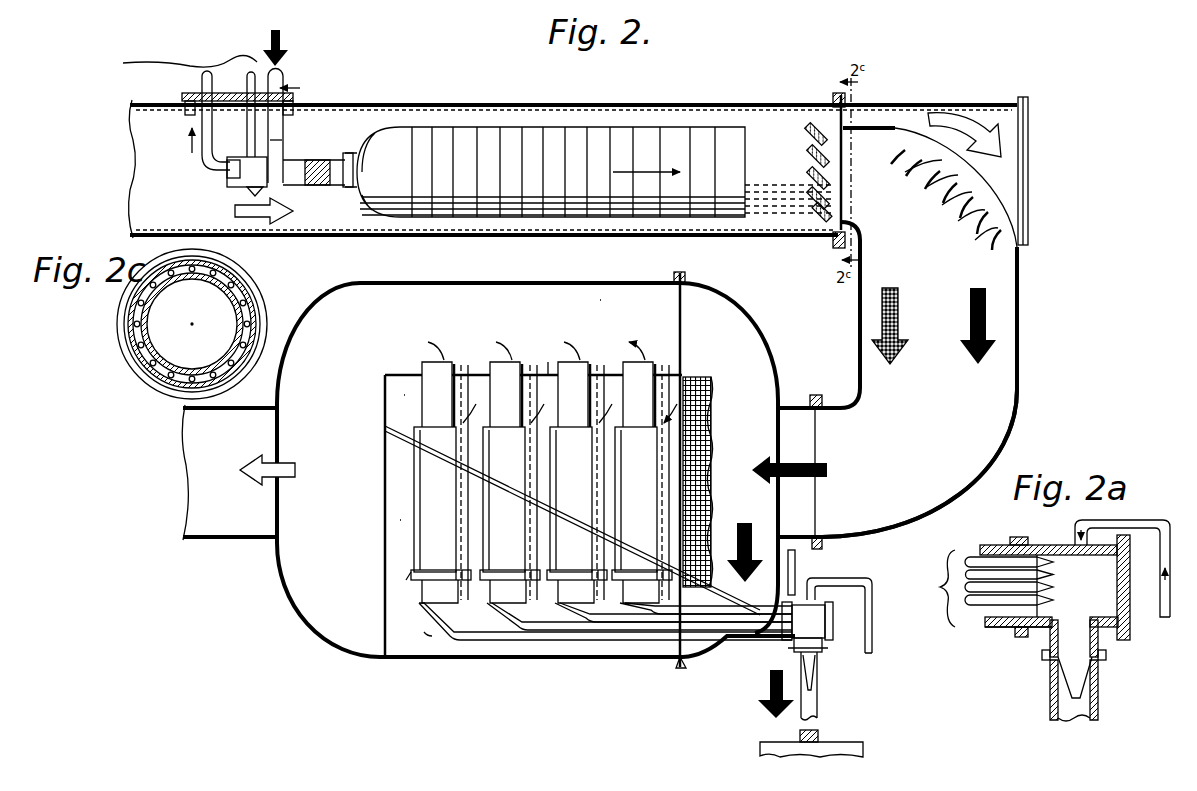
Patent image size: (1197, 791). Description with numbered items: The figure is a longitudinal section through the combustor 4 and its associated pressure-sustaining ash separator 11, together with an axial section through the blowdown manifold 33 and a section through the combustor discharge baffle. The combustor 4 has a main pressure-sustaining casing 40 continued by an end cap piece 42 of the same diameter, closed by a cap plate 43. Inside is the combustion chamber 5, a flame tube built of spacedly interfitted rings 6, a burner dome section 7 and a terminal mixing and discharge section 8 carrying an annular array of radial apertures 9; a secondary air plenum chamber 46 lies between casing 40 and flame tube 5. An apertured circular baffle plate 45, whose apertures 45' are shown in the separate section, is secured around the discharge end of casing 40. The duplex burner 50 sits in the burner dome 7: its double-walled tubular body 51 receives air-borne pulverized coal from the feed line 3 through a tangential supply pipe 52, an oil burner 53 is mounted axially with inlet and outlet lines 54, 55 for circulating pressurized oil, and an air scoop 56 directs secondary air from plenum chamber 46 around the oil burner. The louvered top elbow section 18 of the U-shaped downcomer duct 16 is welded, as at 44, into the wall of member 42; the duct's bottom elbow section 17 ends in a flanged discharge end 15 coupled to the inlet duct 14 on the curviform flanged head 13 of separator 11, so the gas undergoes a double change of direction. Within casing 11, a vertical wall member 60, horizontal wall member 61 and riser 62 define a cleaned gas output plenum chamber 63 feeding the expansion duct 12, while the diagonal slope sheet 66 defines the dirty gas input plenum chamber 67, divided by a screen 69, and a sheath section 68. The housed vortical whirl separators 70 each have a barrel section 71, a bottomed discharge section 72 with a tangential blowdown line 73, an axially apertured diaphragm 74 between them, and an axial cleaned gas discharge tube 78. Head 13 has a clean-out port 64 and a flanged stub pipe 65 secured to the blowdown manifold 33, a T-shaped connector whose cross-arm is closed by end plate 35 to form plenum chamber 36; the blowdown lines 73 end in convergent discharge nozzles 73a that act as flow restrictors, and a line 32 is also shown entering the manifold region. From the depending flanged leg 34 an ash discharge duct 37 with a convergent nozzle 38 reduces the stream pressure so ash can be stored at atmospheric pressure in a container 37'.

In FIG. 2, the feed line 3 is at (277, 83).
In FIG. 2, the combustor 4 is at (672, 106).
In FIG. 2, the combustion chamber 5 is at (470, 126).
In FIG. 2, the rings 6 is at (522, 250).
In FIG. 2, the burner dome section 7 is at (362, 153).
In FIG. 2, the terminal mixing and discharge section 8 is at (776, 161).
In FIG. 2, the radial apertures 9 is at (806, 125).
In FIG. 2, the ash separator 11 is at (311, 314).
In FIG. 2, the expansion duct 12 is at (248, 540).
In FIG. 2, the flanged head 13 is at (772, 356).
In FIG. 2, the inlet duct 14 is at (790, 407).
In FIG. 2, the flanged discharge end 15 is at (823, 400).
In FIG. 2, the downcomer duct 16 is at (1023, 341).
In FIG. 2c, the downcomer duct 16 is at (163, 365).
In FIG. 2, the bottom elbow section 17 is at (940, 515).
In FIG. 2, the louvered top elbow section 18 is at (950, 146).
In FIG. 2, the oil return pipe 32 is at (871, 605).
In FIG. 2a, the oil return pipe 32 is at (1163, 557).
In FIG. 2, the blowdown manifold 33 is at (820, 625).
In FIG. 2a, the blowdown manifold 33 is at (1058, 550).
In FIG. 2, the flanged leg 34 is at (808, 645).
In FIG. 2a, the flanged leg 34 is at (1046, 652).
In FIG. 2a, the end plate 35 is at (1129, 602).
In FIG. 2a, the plenum chamber 36 is at (1073, 586).
In FIG. 2, the ash discharge duct 37 is at (829, 686).
In FIG. 2a, the ash discharge duct 37 is at (1090, 692).
In FIG. 2, the container 37' is at (830, 742).
In FIG. 2a, the convergent nozzle 38 is at (1060, 680).
In FIG. 2, the casing 40 is at (572, 108).
In FIG. 2, the end cap piece 42 is at (898, 108).
In FIG. 2c, the end cap piece 42 is at (240, 277).
In FIG. 2, the cap plate 43 is at (1029, 150).
In FIG. 2, the welding 44 is at (1017, 232).
In FIG. 2, the baffle plate 45 is at (513, 178).
In FIG. 2c, the baffle plate 45 is at (213, 324).
In FIG. 2c, the apertures 45' is at (166, 324).
In FIG. 2, the plenum chamber 46 is at (724, 116).
In FIG. 2, the burner 50 is at (329, 190).
In FIG. 2, the tubular body 51 is at (330, 160).
In FIG. 2, the tangential supply pipe 52 is at (285, 148).
In FIG. 2, the oil burner 53 is at (240, 188).
In FIG. 2, the inlet line 54 is at (247, 142).
In FIG. 2, the outlet line 55 is at (205, 168).
In FIG. 2, the air scoop 56 is at (265, 192).
In FIG. 2, the internal vertical wall member 60 is at (385, 494).
In FIG. 2, the horizontal internal wall member 61 is at (538, 372).
In FIG. 2, the riser 62 is at (686, 358).
In FIG. 2, the cleaned gas output plenum chamber 63 is at (469, 372).
In FIG. 2, the clean-out port 64 is at (795, 580).
In FIG. 2, the flanged stub pipe 65 is at (757, 650).
In FIG. 2a, the flanged stub pipe 65 is at (1010, 630).
In FIG. 2, the slope sheet 66 is at (410, 455).
In FIG. 2, the dirty gas input plenum chamber 67 is at (576, 414).
In FIG. 2, the sheath section 68 is at (555, 589).
In FIG. 2, the screen 69 is at (714, 507).
In FIG. 2, the vortical whirl separator 70 is at (449, 523).
In FIG. 2, the barrel section 71 is at (537, 500).
In FIG. 2, the discharge section 72 is at (541, 587).
In FIG. 2, the blowdown line 73 is at (432, 628).
In FIG. 2a, the blowdown line 73 is at (978, 588).
In FIG. 2a, the convergent discharge nozzle 73a is at (1052, 604).
In FIG. 2, the diaphragm 74 is at (411, 583).
In FIG. 2, the cleaned gas discharge tube 78 is at (428, 370).